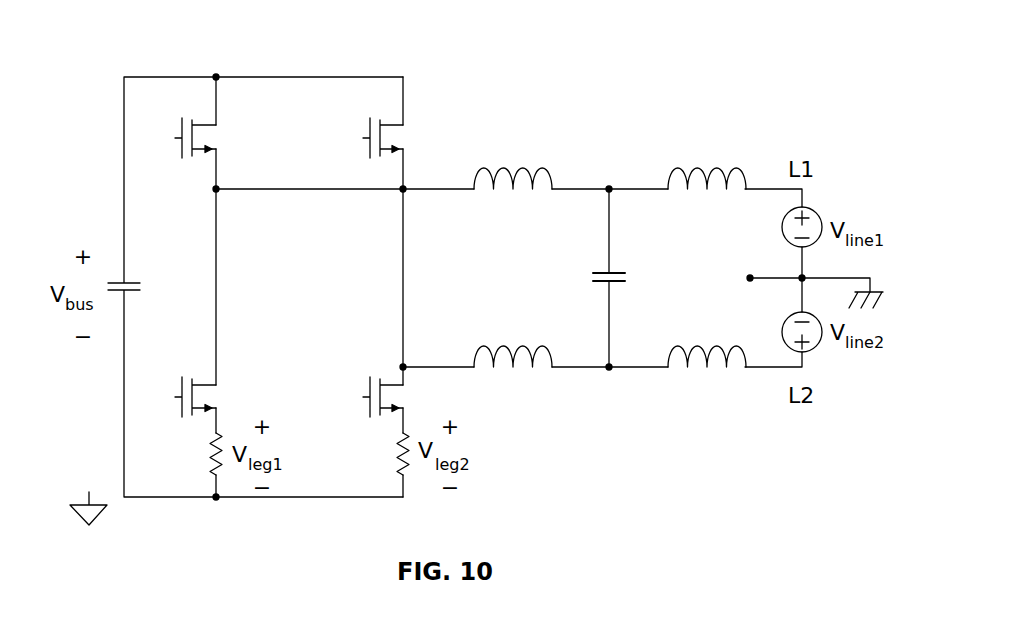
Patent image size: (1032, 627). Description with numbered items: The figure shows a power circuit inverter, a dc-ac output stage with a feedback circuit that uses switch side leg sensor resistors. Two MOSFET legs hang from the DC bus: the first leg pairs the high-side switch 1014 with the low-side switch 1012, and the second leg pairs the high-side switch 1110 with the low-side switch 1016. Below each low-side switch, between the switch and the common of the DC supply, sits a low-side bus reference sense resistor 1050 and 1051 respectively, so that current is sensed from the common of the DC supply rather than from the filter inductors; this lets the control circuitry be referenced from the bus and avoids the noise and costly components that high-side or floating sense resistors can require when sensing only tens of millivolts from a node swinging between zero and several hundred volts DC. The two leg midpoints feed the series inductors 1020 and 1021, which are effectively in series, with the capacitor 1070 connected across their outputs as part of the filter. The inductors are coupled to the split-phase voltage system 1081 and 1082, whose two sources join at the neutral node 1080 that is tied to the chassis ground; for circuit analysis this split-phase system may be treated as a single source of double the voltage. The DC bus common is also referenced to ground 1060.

The high-side switch 1014 is at (226, 108).
The high-side switch 1110 is at (416, 98).
The low-side switch 1012 is at (232, 366).
The low-side switch 1016 is at (375, 366).
The series inductor 1020 is at (541, 159).
The series inductor 1021 is at (514, 385).
The capacitor 1070 is at (617, 271).
The neutral node V_N 1080 is at (700, 276).
The split phase voltage system 1081 is at (814, 210).
The split phase voltage system 1082 is at (812, 352).
The low-side bus reference sense resistor 1050 is at (209, 457).
The low-side bus reference sense resistor 1051 is at (396, 457).
The ground reference 1060 is at (90, 512).